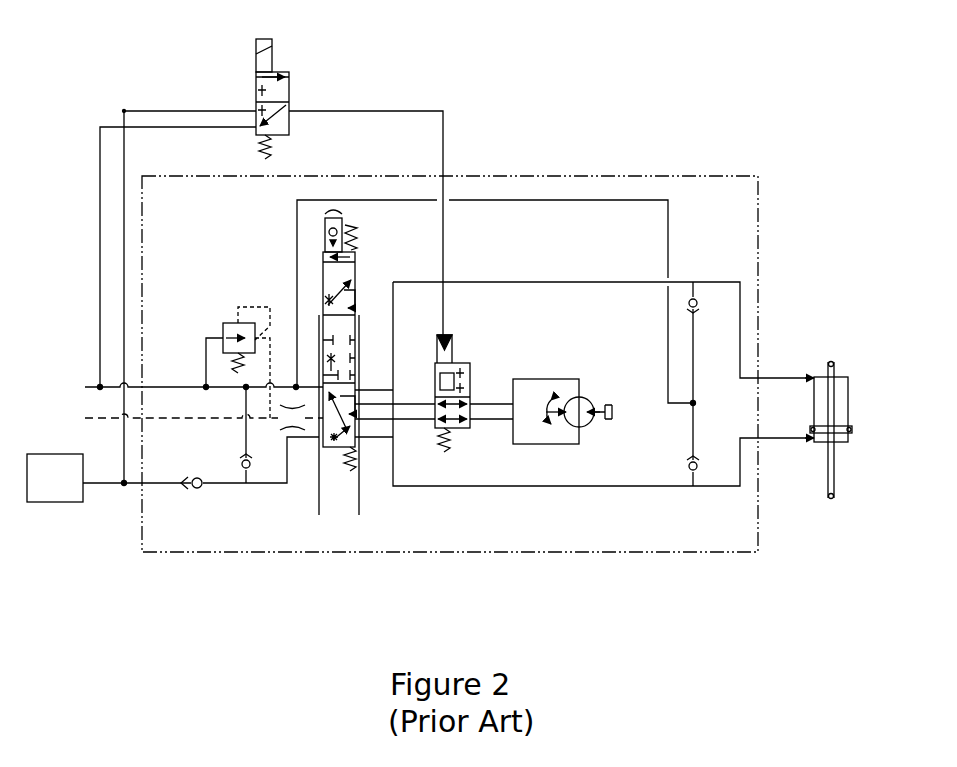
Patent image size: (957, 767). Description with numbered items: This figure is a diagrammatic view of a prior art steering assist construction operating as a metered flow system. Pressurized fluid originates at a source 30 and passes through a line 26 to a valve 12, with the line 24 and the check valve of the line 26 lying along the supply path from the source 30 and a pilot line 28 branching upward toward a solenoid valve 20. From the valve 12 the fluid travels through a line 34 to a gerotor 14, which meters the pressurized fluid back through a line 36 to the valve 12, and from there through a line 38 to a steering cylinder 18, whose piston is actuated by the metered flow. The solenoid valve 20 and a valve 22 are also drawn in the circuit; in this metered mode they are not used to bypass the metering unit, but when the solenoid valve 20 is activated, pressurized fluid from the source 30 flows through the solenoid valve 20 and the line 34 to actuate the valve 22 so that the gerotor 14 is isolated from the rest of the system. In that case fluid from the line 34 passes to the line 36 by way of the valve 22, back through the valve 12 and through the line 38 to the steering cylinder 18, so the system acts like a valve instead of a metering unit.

The valve 12 is at (318, 482).
The gerotor 14 is at (540, 378).
The steering cylinder 18 is at (848, 405).
The solenoid valve 20 is at (290, 93).
The valve 22 is at (463, 363).
The supply conduit 24 is at (117, 493).
The line 26 is at (163, 487).
The pilot conduit 28 is at (128, 165).
The source 30 is at (55, 478).
The line 34 is at (445, 147).
The line 36 is at (406, 400).
The line 38 is at (550, 280).